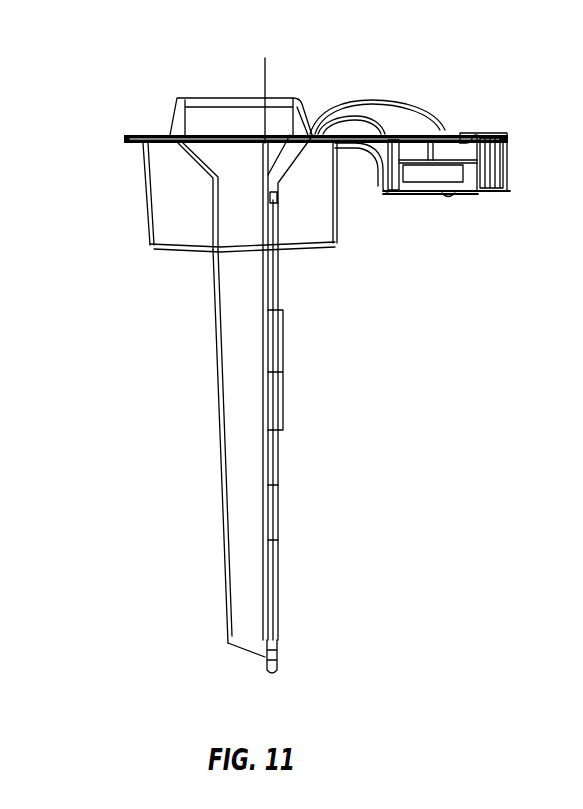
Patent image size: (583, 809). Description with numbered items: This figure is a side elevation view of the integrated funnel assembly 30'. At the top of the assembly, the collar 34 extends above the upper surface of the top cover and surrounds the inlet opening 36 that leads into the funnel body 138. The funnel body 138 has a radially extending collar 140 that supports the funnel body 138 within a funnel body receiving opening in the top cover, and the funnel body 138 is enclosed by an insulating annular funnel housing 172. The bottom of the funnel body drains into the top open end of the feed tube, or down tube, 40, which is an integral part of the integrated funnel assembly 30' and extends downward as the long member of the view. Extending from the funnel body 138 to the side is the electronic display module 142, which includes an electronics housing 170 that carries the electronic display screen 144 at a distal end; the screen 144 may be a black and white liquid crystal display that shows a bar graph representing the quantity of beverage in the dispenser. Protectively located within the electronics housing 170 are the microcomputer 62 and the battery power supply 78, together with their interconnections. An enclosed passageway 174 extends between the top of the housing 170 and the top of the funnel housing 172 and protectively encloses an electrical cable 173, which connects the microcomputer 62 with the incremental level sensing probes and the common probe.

The integrated funnel assembly 30' is at (378, 30).
The inlet opening 36 is at (265, 60).
The enclosed passageway 174 is at (356, 108).
The electrical cable 173 is at (366, 133).
The collar 34 is at (175, 104).
The radially extending collar 140 is at (127, 137).
The funnel body 138 is at (197, 148).
The insulating annular funnel housing 172 is at (159, 238).
The feed tube 40 is at (231, 516).
The electronics housing 170 is at (405, 192).
The microcomputer 62 is at (427, 177).
The battery power supply 78 is at (480, 192).
The electronic display screen 144 is at (497, 160).
The electronic display module 142 is at (457, 128).